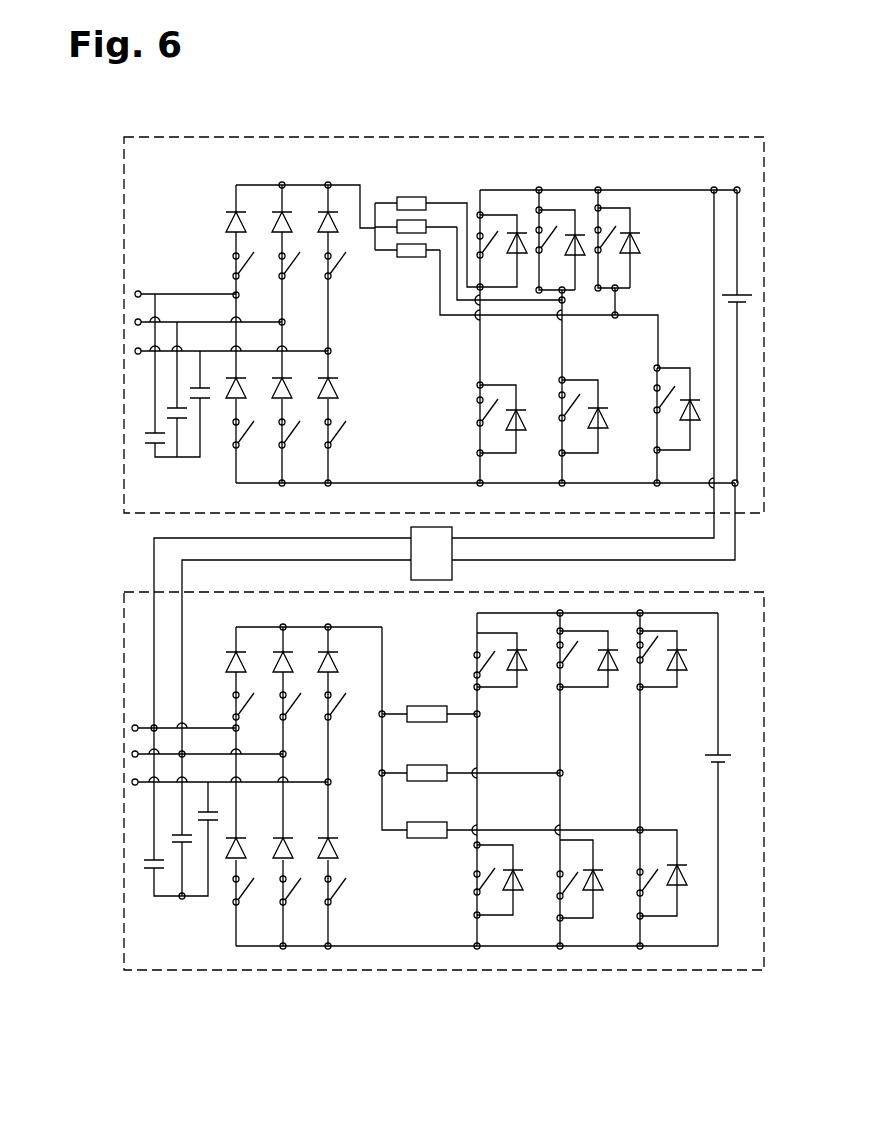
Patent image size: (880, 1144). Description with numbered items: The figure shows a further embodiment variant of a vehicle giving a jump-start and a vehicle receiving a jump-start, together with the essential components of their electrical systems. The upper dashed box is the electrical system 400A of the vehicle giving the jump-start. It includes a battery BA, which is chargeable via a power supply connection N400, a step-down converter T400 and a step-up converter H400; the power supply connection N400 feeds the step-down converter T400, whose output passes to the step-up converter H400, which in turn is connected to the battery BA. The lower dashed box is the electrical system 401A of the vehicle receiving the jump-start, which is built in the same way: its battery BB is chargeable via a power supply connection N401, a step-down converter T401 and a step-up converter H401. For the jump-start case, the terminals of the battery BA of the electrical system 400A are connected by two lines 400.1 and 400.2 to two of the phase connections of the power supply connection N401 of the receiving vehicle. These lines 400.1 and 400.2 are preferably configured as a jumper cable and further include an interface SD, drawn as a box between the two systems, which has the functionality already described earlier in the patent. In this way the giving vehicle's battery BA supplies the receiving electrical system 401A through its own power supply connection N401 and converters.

The electrical system 400A is at (635, 150).
The step-down converter T400 is at (306, 152).
The step-up converter H400 is at (545, 170).
The power supply connection N400 is at (147, 283).
The battery BA is at (730, 292).
The interface SD is at (430, 540).
The line 400.1 is at (528, 538).
The line 400.2 is at (528, 562).
The electrical system 401A is at (643, 610).
The step-down converter T401 is at (291, 621).
The step-up converter H401 is at (530, 952).
The power supply connection N401 is at (135, 712).
The battery BB is at (715, 752).